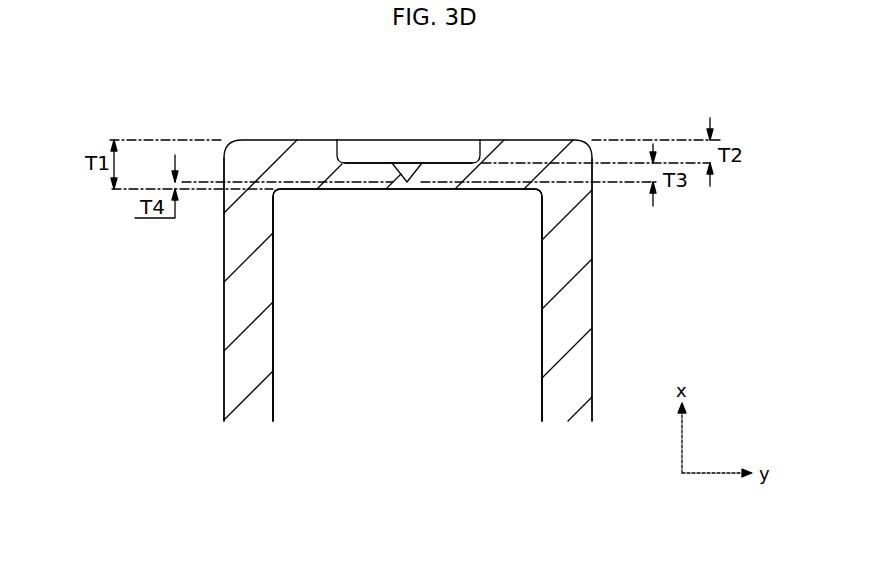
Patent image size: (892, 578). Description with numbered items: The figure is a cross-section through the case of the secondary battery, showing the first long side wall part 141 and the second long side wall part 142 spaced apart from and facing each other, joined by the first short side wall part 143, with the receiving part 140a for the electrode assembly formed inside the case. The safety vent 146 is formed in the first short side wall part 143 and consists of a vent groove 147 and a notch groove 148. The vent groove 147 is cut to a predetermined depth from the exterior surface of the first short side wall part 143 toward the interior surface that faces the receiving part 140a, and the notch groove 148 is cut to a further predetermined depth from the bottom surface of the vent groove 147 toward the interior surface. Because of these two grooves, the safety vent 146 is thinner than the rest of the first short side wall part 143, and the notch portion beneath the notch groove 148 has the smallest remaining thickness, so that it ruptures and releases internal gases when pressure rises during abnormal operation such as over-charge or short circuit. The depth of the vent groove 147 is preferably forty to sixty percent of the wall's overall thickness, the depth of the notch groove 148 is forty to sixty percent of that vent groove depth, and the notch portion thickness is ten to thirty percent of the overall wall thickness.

The receiving part 140a is at (410, 388).
The first long side wall part 141 is at (577, 302).
The second long side wall part 142 is at (237, 302).
The first short side wall part 143 is at (545, 153).
The safety vent 146 is at (373, 165).
The vent groove 147 is at (459, 150).
The notch groove 148 is at (415, 170).